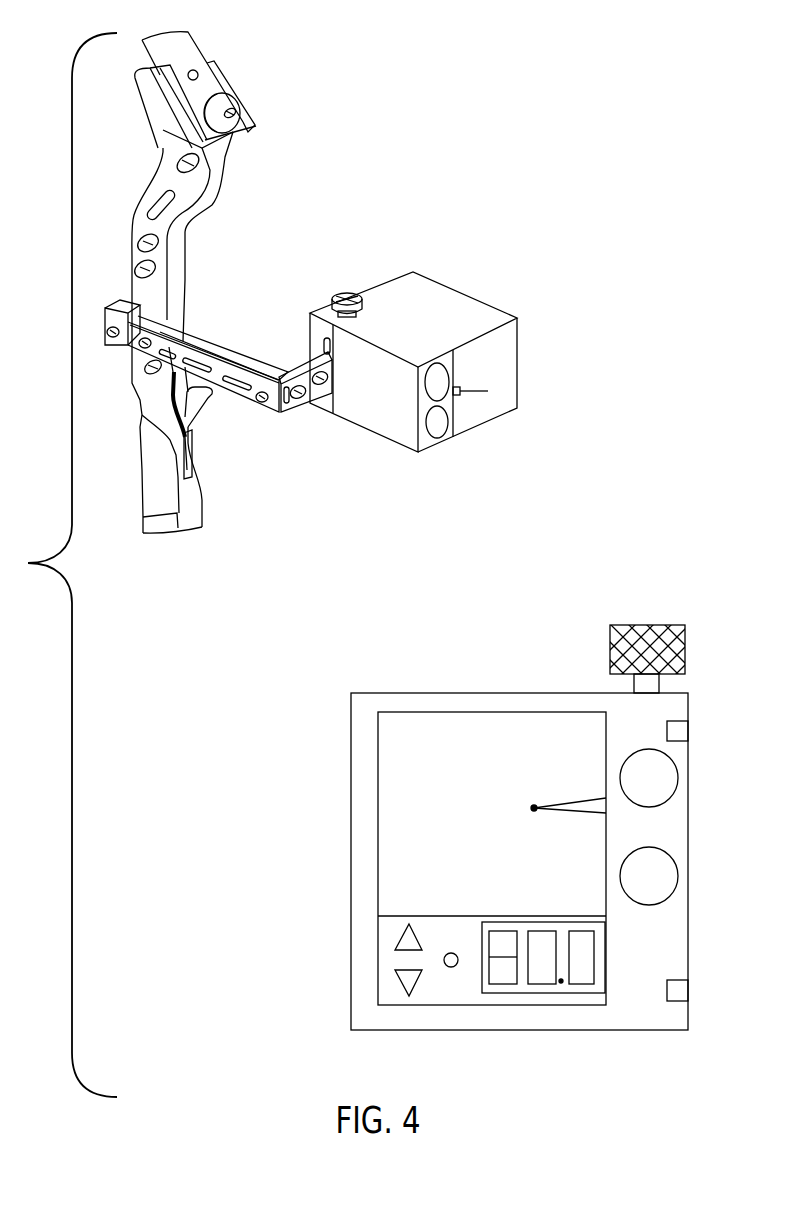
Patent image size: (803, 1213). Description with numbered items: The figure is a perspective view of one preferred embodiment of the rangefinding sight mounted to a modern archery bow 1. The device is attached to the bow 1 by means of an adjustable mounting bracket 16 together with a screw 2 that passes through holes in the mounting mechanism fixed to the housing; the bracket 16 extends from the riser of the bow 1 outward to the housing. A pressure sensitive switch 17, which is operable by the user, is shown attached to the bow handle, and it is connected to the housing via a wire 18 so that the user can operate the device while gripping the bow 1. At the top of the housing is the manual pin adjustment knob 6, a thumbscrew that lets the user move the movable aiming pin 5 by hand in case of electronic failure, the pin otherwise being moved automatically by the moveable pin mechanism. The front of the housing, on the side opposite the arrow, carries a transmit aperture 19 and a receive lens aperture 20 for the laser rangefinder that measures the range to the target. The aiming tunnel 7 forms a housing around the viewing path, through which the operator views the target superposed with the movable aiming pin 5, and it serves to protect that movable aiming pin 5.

The bow 1 is at (242, 174).
The screw 2 is at (109, 343).
The movable aiming pin 5 is at (480, 402).
The manual pin adjustment knob 6 is at (350, 292).
The aiming tunnel 7 is at (500, 364).
The adjustable mounting bracket 16 is at (263, 414).
The pressure sensitive switch 17 is at (196, 461).
The wire 18 is at (160, 408).
The transmit lens aperture 19 is at (445, 432).
The receive lens aperture 20 is at (432, 372).